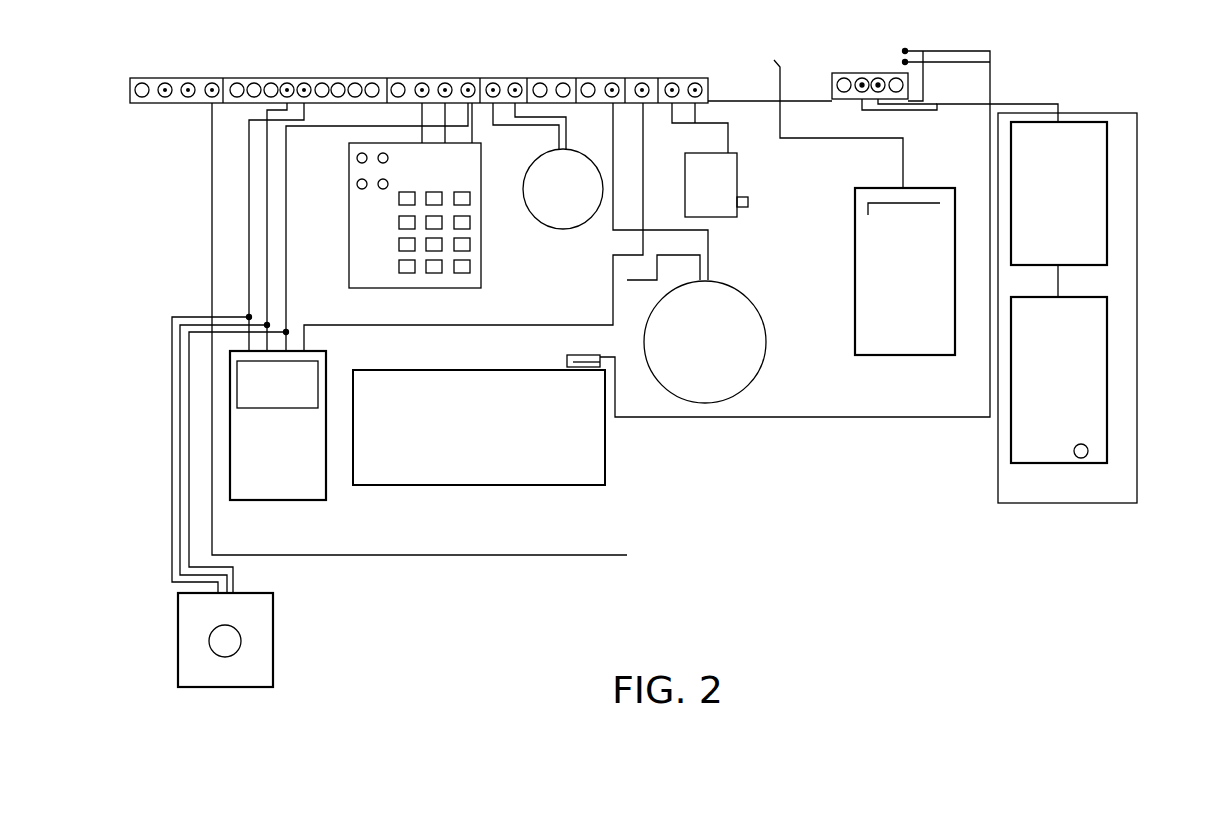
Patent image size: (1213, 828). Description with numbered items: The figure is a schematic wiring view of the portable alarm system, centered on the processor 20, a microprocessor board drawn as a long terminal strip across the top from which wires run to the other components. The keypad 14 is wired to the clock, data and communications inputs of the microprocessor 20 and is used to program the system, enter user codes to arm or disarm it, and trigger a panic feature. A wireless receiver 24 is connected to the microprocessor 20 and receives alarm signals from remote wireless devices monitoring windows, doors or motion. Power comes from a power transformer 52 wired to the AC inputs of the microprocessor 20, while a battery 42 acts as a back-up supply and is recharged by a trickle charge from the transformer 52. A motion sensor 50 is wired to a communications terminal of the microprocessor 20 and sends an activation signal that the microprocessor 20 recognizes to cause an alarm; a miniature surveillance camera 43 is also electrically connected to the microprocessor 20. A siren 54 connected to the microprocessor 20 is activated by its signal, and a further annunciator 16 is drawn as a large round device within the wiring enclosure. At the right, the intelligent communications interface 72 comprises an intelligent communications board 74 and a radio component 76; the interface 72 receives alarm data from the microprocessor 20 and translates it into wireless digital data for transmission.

The processor 20 is at (664, 78).
The keypad 14 is at (481, 268).
The siren 54 is at (563, 230).
The power transformer 52 is at (725, 217).
The siren 16 is at (765, 350).
The wireless receiver 24 is at (903, 355).
The intelligent communications interface 72 is at (1137, 250).
The intelligent communications board 74 is at (1096, 156).
The radio component 76 is at (1107, 405).
The motion sensor 50 is at (277, 500).
The battery 42 is at (477, 485).
The miniature surveillance camera 43 is at (273, 640).